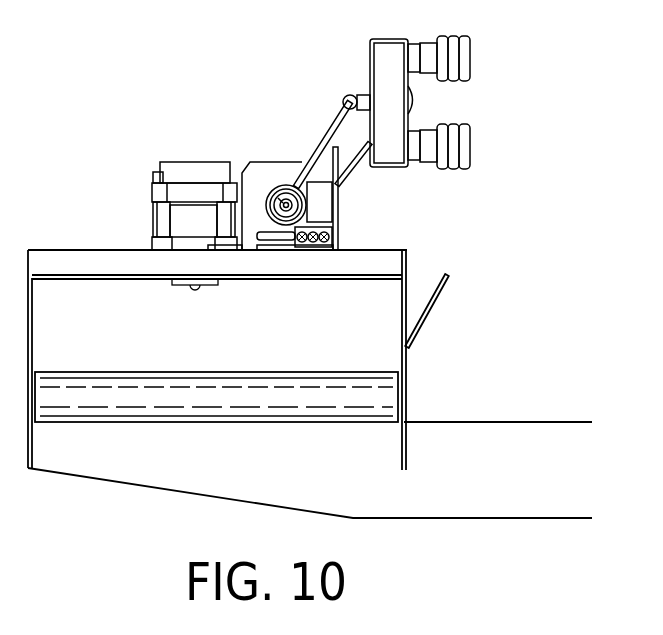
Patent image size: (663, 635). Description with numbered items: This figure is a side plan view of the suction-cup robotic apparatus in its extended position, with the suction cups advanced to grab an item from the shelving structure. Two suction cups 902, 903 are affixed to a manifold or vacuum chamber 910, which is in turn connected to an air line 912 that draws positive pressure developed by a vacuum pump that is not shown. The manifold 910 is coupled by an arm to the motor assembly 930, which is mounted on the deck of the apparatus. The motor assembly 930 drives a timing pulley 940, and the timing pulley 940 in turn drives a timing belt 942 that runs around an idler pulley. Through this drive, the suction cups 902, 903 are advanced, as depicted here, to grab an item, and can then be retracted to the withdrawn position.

The suction cup 902 is at (470, 53).
The suction cup 903 is at (470, 143).
The manifold or vacuum chamber 910 is at (390, 169).
The air line 912 is at (351, 94).
The motor assembly 930 is at (241, 161).
The timing pulley 940 is at (270, 186).
The timing belt 942 is at (317, 143).